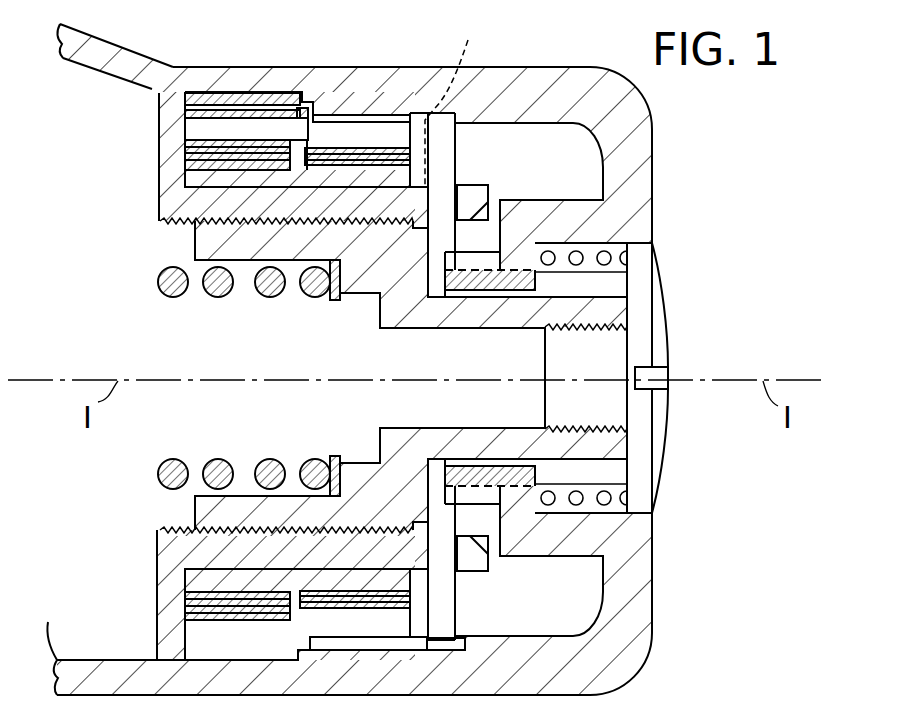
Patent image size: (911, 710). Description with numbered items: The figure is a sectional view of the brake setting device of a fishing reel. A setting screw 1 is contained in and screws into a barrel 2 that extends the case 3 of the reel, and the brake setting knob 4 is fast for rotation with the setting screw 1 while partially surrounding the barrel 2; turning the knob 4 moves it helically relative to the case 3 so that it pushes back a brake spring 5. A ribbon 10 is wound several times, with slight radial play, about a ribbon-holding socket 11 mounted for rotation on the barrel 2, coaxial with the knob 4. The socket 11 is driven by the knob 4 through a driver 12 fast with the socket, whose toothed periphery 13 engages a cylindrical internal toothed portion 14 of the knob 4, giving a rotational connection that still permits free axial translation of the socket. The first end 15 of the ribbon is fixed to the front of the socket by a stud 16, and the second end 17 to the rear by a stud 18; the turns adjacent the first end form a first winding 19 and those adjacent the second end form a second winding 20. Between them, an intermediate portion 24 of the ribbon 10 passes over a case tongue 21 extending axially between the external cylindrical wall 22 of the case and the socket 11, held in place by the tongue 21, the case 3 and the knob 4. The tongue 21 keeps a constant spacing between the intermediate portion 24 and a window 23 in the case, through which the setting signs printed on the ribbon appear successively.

The setting screw 1 is at (197, 250).
The barrel 2 is at (160, 223).
The case 3 is at (103, 62).
The brake setting knob 4 is at (633, 147).
The brake spring 5 is at (162, 292).
The ribbon 10 is at (395, 145).
The ribbon-holding socket 11 is at (182, 182).
The driver 12 is at (425, 151).
The toothed periphery 13 is at (461, 98).
The cylindrical internal toothed portion 14 is at (383, 120).
The first end 15 is at (190, 165).
The stud 16 is at (200, 187).
The second end 17 is at (302, 620).
The stud 18 is at (395, 606).
The first winding 19 is at (184, 150).
The second winding 20 is at (343, 150).
The case tongue 21 is at (244, 115).
The external cylindrical wall 22 is at (333, 80).
The window 23 is at (278, 93).
The intermediate portion 24 is at (197, 108).